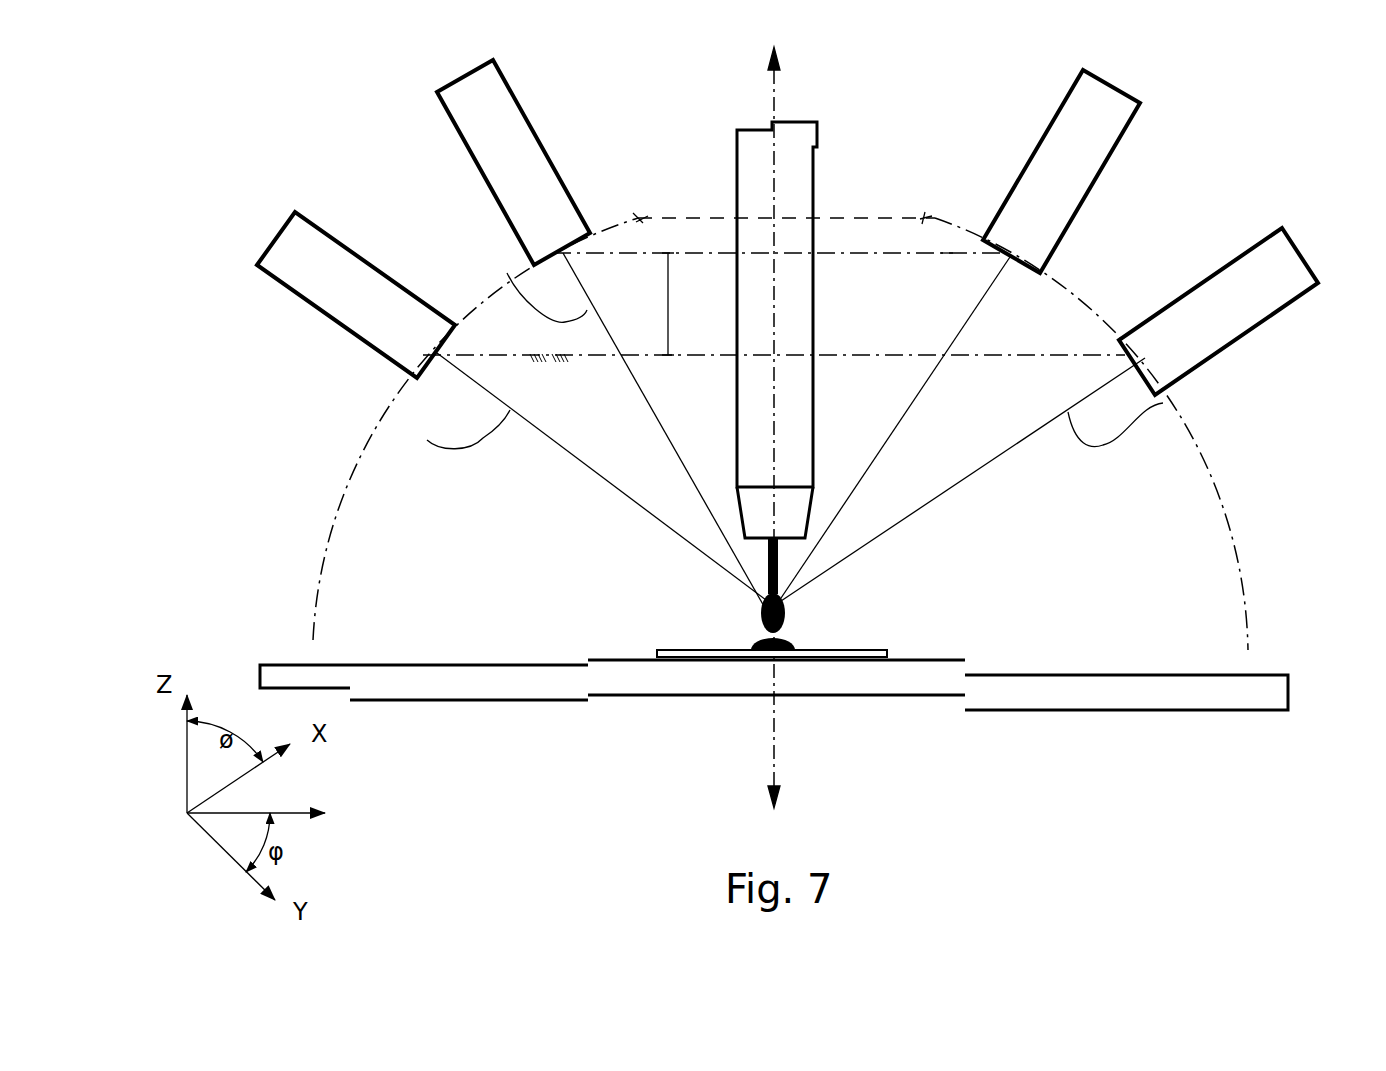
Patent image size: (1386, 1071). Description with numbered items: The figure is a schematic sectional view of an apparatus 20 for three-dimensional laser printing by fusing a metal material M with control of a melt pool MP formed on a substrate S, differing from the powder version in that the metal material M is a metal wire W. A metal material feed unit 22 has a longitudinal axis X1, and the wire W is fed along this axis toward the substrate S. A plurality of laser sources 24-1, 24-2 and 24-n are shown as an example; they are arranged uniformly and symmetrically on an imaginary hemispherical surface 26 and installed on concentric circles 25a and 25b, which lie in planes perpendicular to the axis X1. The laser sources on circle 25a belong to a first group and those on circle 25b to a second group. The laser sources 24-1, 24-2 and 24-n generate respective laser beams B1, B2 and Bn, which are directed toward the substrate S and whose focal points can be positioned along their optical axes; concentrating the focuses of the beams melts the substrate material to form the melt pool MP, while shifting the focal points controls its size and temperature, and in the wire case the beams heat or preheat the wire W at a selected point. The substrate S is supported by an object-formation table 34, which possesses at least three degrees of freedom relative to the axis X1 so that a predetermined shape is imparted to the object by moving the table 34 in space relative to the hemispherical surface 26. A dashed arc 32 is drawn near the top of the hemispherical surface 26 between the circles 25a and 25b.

The apparatus 20 is at (1176, 177).
The metal material feed unit 22 is at (737, 190).
The laser source 24-1 is at (327, 287).
The laser source 24-2 is at (477, 140).
The laser source 24-n is at (1233, 267).
The concentric circle 25a is at (668, 253).
The concentric circle 25b is at (947, 253).
The imaginary hemispherical surface 26 is at (1235, 555).
The arc segment 32 is at (855, 222).
The object-formation table 34 is at (1068, 690).
The laser beam B1 is at (427, 440).
The laser beam B2 is at (507, 273).
The laser beam Bn is at (1163, 403).
The melt pool MP is at (790, 650).
The metal material M is at (758, 592).
The metal wire W is at (765, 612).
The substrate S is at (878, 652).
The longitudinal axis X1 is at (800, 431).